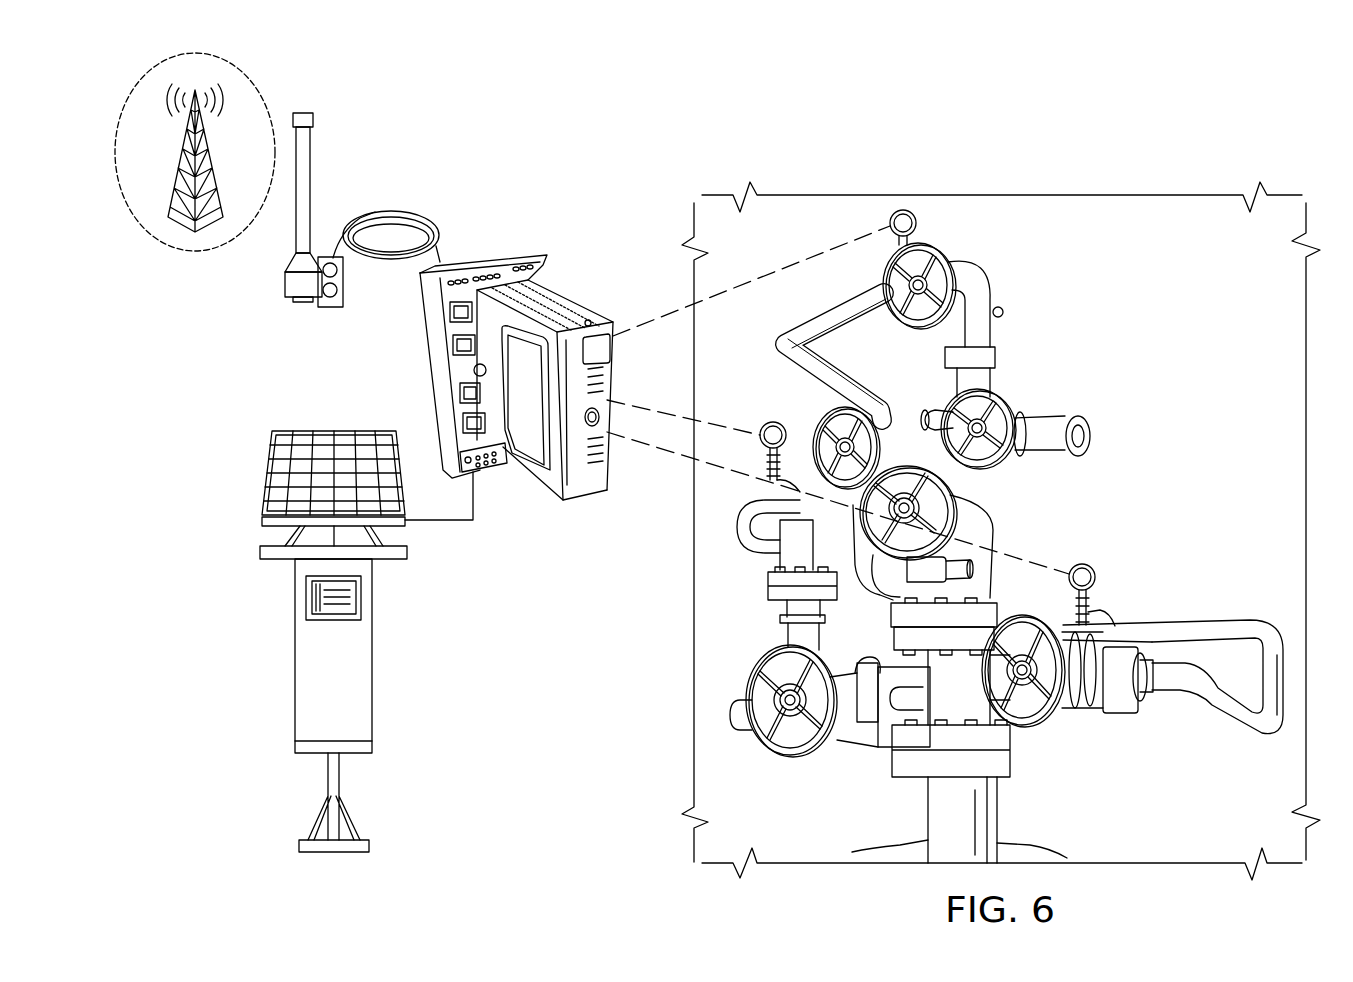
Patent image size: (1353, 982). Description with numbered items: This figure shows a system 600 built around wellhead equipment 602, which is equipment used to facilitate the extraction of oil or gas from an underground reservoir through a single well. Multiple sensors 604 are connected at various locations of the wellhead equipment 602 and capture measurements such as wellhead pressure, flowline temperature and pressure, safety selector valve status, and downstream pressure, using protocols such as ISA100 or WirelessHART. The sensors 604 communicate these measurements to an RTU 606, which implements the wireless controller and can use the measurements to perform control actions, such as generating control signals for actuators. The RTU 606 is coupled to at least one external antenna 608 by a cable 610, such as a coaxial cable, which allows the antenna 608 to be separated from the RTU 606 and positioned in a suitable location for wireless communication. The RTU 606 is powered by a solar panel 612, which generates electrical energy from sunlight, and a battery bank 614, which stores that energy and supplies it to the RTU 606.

The system 600 is at (936, 128).
The wellhead equipment 602 is at (1103, 465).
The sensors 604 is at (936, 230).
The RTU 606 is at (545, 487).
The external antenna 608 is at (315, 173).
The cable 610 is at (410, 217).
The solar panel 612 is at (262, 472).
The battery bank 614 is at (290, 657).